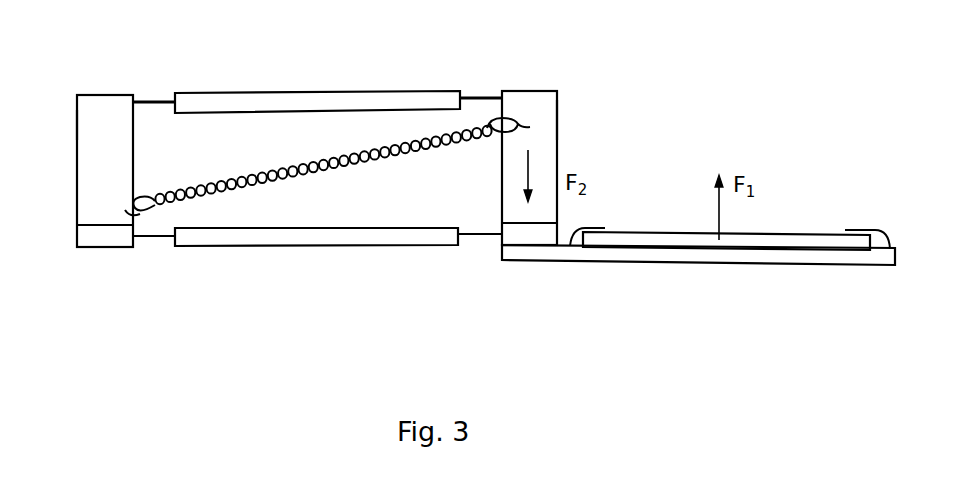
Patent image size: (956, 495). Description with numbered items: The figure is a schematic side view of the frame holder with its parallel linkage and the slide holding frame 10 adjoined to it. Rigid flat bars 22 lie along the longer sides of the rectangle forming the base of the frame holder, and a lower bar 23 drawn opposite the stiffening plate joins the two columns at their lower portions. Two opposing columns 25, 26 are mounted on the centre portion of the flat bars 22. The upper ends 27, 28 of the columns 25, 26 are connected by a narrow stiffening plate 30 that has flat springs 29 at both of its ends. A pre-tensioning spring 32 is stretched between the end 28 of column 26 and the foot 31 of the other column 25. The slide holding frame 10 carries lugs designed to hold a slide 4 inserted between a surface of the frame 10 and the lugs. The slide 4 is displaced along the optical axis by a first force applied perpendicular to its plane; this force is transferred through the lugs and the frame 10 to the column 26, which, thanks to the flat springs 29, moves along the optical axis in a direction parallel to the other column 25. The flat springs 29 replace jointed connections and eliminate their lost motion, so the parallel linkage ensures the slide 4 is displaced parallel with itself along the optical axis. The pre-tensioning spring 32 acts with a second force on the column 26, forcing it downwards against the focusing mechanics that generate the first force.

The slide 4 is at (768, 232).
The slide holding frame 10 is at (688, 265).
The rigid flat bars 22 is at (110, 247).
The lower bar 23 is at (157, 237).
The column 25 is at (77, 137).
The column 26 is at (548, 125).
The upper end of column 27 is at (105, 95).
The upper end of column 28 is at (530, 91).
The flat springs 29 is at (158, 100).
The narrow stiffening plate 30 is at (297, 93).
The foot of column 31 is at (77, 200).
The pre-tensioning spring 32 is at (378, 150).